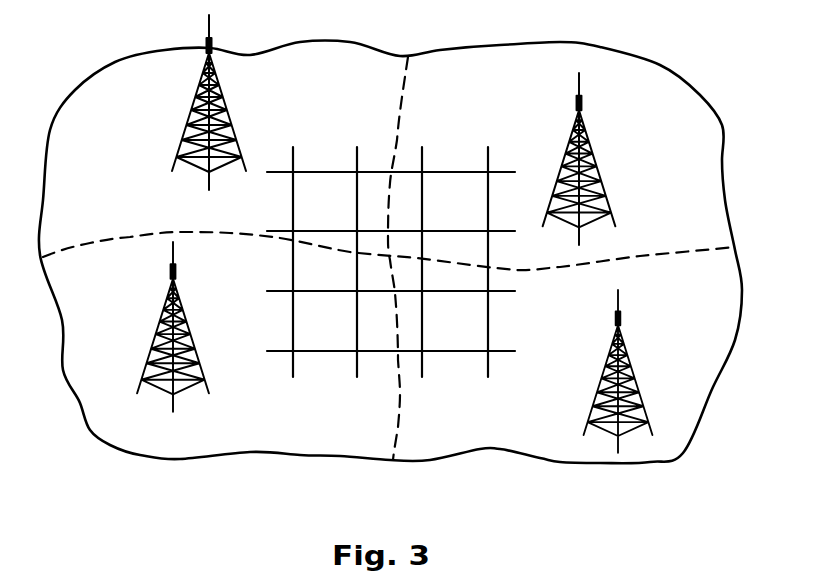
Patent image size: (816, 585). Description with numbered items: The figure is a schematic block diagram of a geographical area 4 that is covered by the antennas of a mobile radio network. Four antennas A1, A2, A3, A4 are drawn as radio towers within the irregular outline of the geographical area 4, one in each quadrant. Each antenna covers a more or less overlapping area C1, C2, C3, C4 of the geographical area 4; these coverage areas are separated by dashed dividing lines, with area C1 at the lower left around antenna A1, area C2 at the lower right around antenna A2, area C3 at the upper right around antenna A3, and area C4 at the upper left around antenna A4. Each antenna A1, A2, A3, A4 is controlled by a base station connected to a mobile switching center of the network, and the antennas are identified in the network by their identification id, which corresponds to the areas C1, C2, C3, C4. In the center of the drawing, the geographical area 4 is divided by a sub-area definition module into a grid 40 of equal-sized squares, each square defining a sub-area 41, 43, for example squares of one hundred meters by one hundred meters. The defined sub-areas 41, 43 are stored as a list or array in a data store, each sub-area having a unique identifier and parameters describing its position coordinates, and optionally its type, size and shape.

The geographical area 4 is at (683, 453).
The grid 40 is at (273, 373).
The sub-area 41 is at (325, 183).
The sub-area 43 is at (448, 183).
The antenna A1 is at (160, 392).
The antenna A2 is at (635, 373).
The antenna A3 is at (602, 193).
The antenna A4 is at (186, 125).
The area C1 is at (78, 365).
The area C2 is at (557, 447).
The area C3 is at (655, 78).
The area C4 is at (115, 77).